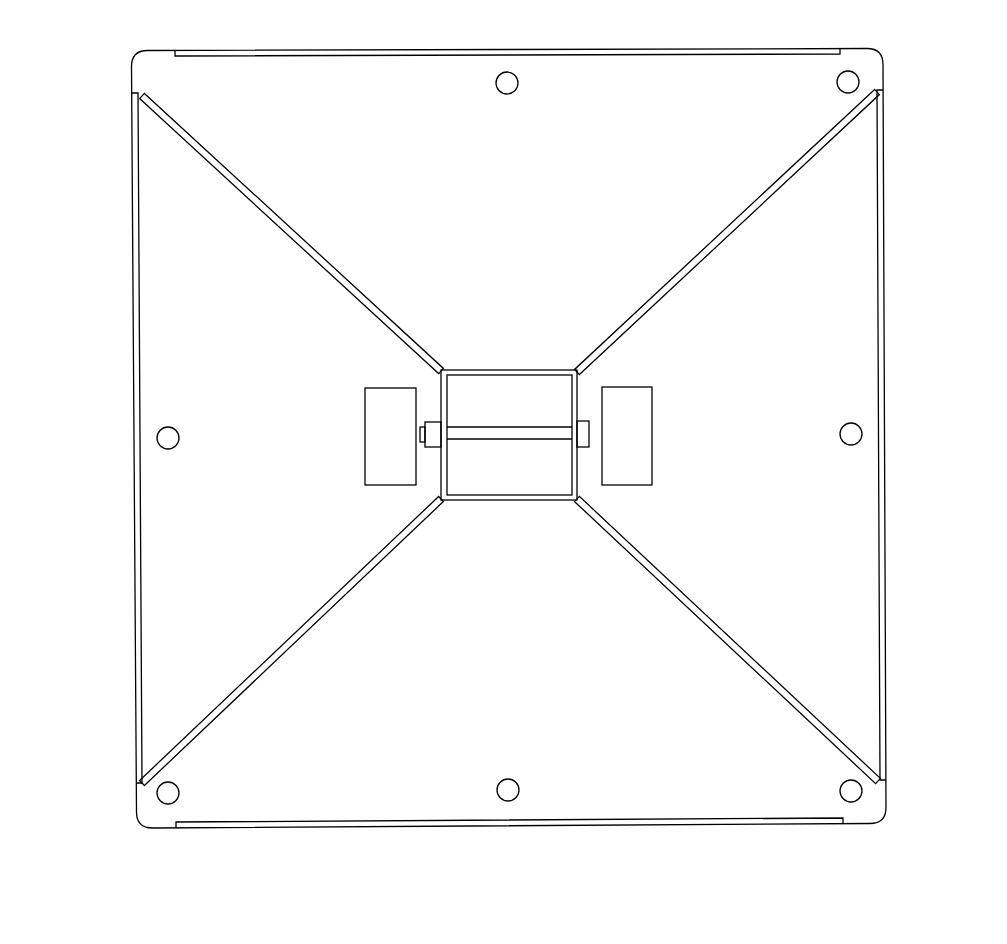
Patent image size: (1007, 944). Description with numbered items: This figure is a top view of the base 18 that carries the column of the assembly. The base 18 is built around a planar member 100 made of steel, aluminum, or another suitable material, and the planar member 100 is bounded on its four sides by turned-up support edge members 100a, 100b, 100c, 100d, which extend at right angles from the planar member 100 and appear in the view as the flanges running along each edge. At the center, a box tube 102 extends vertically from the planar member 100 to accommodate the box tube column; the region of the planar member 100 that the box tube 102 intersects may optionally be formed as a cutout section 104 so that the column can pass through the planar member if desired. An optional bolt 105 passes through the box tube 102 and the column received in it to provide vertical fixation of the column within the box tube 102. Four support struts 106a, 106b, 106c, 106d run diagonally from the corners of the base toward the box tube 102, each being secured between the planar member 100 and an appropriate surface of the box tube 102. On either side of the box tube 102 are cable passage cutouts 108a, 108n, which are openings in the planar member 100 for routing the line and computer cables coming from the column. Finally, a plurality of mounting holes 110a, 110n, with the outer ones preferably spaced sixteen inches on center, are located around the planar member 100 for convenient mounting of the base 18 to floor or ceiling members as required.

The base 18 is at (908, 265).
The planar member 100 is at (522, 672).
The support edge member 100a is at (509, 840).
The support edge member 100b is at (101, 438).
The support edge member 100c is at (507, 38).
The support edge member 100d is at (921, 435).
The box tube 102 is at (509, 414).
The cutout section 104 is at (523, 482).
The bolt 105 is at (504, 422).
The support strut 106a is at (292, 641).
The support strut 106b is at (292, 233).
The support strut 106c is at (727, 231).
The support strut 106d is at (728, 639).
The cable passage cutout 108a is at (352, 436).
The cable passage cutout 108n is at (662, 436).
The mounting hole 110a is at (120, 804).
The mounting hole 110n is at (898, 71).